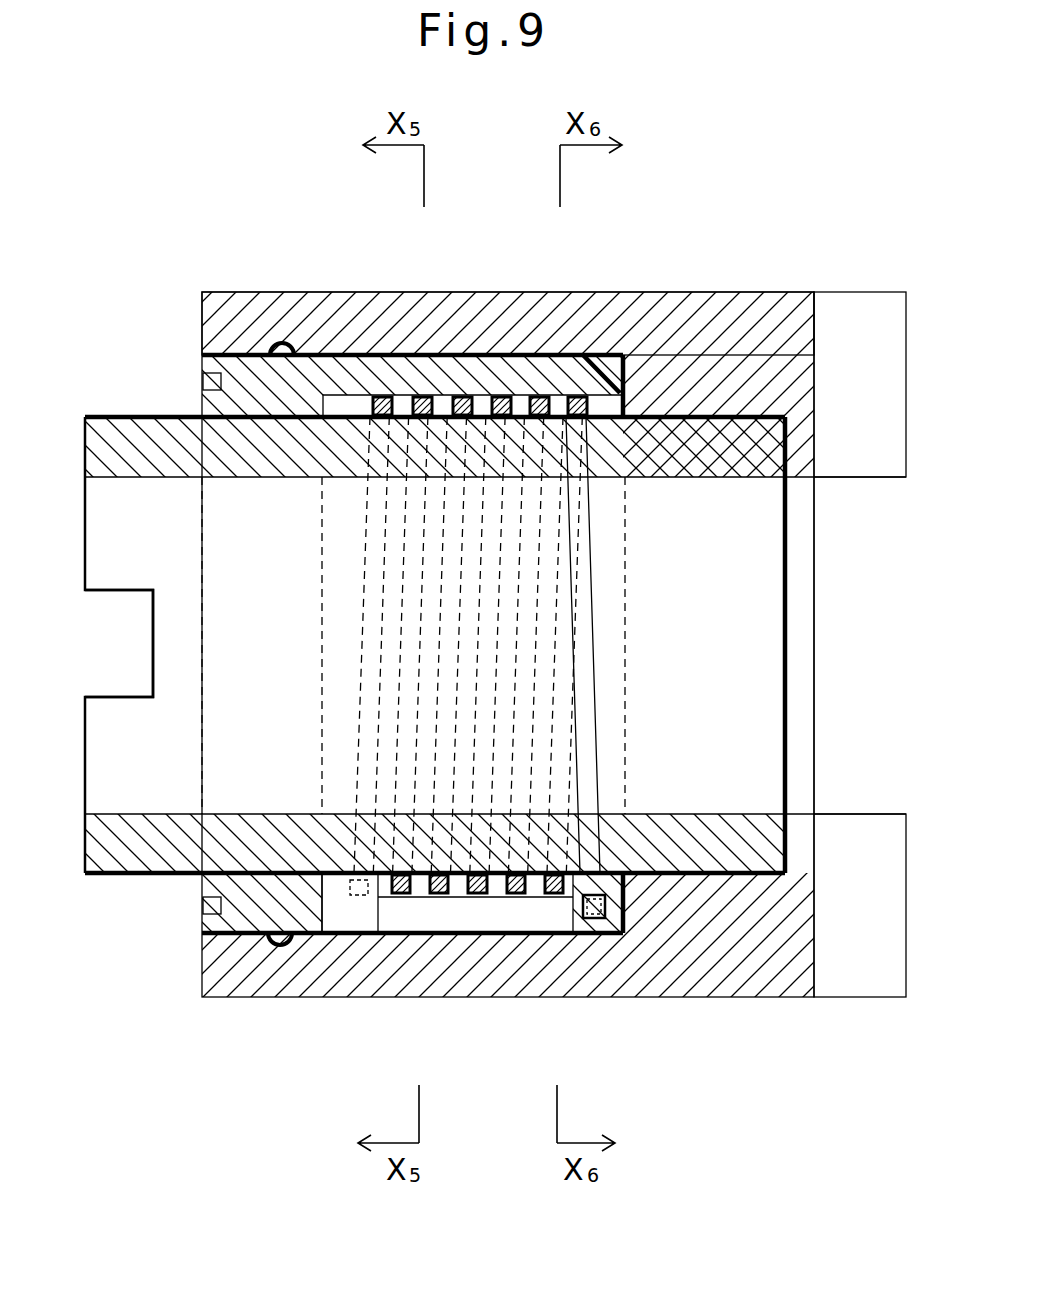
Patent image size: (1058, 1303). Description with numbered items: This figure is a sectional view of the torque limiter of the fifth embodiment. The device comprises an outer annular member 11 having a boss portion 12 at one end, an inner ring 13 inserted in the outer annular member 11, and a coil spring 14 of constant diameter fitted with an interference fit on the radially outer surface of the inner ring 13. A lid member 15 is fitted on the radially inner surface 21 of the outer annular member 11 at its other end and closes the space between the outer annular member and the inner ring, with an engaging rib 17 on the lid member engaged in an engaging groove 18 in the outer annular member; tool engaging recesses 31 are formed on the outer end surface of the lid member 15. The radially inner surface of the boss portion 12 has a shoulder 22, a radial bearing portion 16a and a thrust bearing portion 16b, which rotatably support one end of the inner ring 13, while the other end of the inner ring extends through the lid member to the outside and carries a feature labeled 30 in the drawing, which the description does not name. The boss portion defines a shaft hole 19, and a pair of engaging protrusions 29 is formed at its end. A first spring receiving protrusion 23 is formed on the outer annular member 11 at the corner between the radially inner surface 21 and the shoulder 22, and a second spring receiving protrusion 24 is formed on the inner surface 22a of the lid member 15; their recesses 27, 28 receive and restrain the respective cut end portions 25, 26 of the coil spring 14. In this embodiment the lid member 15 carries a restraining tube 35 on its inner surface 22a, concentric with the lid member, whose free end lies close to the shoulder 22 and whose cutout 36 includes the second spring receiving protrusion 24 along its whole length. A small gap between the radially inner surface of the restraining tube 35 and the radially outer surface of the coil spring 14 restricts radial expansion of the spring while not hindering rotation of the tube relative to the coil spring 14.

The outer annular member 11 is at (533, 322).
The boss portion 12 is at (763, 340).
The inner ring 13 is at (130, 435).
The coil spring 14 is at (396, 400).
The lid member 15 is at (241, 372).
The radial bearing portion 16a is at (676, 413).
The thrust bearing portion 16b is at (780, 443).
The engaging rib 17 is at (277, 946).
The engaging groove 18 is at (288, 944).
The shaft hole 19 is at (800, 477).
The radially inner surface 21 is at (318, 366).
The shoulder 22 is at (613, 372).
The inner surface 22a is at (337, 392).
The first spring receiving protrusion 23 is at (607, 928).
The second spring receiving protrusion 24 is at (345, 905).
The cut end portion 25 is at (600, 790).
The cut end portion 26 is at (357, 790).
The recess 27 is at (590, 925).
The recess 28 is at (366, 897).
The engaging protrusions 29 is at (852, 325).
The shaft groove 30 is at (130, 695).
The tool engaging recesses 31 is at (205, 905).
The restraining tube 35 is at (470, 380).
The cutout 36 is at (477, 906).